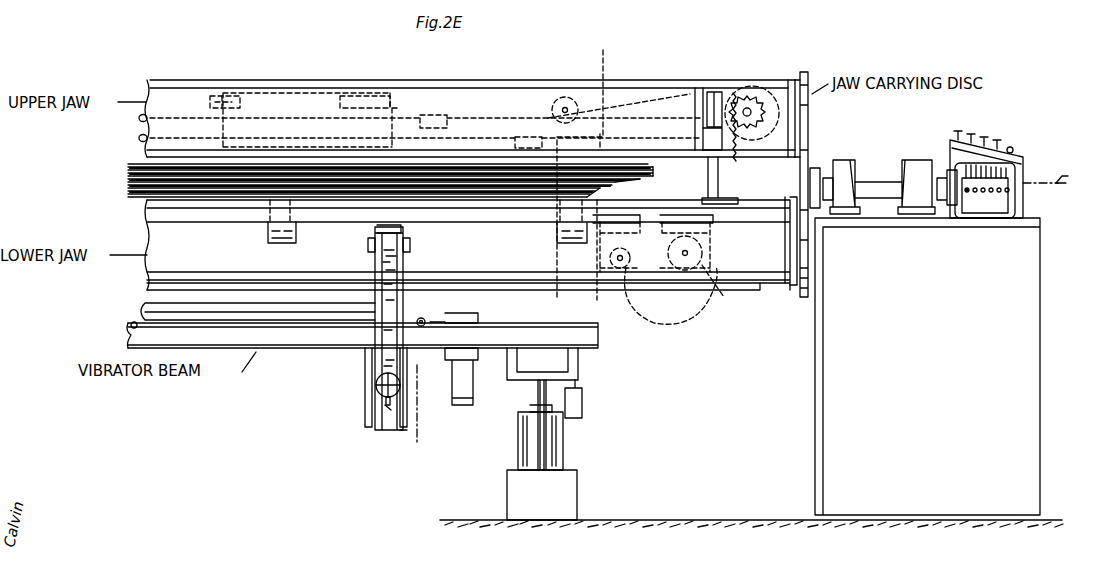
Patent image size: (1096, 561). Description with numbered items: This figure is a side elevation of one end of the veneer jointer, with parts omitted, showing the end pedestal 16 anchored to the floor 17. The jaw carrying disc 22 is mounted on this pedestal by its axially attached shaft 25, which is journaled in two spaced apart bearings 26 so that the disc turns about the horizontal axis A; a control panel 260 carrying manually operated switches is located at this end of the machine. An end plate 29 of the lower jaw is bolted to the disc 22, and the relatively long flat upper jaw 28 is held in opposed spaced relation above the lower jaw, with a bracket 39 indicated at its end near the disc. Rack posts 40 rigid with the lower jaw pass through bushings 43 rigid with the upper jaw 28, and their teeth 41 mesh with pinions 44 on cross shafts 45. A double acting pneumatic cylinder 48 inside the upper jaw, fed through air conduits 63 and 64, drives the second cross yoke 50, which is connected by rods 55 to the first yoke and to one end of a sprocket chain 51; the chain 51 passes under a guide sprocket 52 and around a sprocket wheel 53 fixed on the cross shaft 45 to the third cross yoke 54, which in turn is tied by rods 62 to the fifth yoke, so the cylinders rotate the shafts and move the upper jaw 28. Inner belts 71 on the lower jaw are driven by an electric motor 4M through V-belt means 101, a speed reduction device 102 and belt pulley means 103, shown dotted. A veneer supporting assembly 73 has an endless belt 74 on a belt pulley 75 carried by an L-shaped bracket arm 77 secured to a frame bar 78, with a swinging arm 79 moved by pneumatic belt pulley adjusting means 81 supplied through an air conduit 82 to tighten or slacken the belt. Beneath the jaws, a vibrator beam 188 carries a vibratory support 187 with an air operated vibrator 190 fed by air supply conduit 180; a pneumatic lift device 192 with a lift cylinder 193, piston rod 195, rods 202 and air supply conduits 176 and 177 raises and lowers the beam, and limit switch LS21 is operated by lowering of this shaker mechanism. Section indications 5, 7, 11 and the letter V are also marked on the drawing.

The upper jaw 28 is at (418, 82).
The double acting pneumatic cylinder 48 is at (258, 94).
The rods 62 is at (200, 118).
The rods 55 is at (215, 98).
The air conduit 63 is at (223, 94).
The air conduit 64 is at (352, 96).
The second cross yoke 50 is at (432, 116).
The third cross yoke 54 is at (528, 138).
The sprocket chain 51 is at (498, 124).
The guide sprocket 52 is at (558, 98).
The bushing 43 is at (706, 111).
The rack post 40 is at (703, 129).
The cross shaft 45 is at (752, 96).
The sprocket wheel 53 is at (752, 86).
The teeth 41 is at (736, 150).
The pinion 44 is at (756, 122).
The jaw carrying disc 22 is at (804, 70).
The bracket 39 is at (790, 80).
The section line 5 is at (614, 46).
The section line 7 is at (598, 190).
The section line 11 is at (404, 193).
The veneer strip V is at (139, 194).
The end plate 29 is at (789, 259).
The inner belts 71 is at (268, 236).
The V-belt means 101 is at (710, 238).
The speed reduction device 102 is at (642, 268).
The belt pulley means 103 is at (648, 318).
The electric motor 4M is at (716, 292).
The frame bar 78 is at (209, 308).
The vibrator beam 188 is at (278, 348).
The vibratory support 187 is at (470, 318).
The endless belt 74 is at (395, 276).
The belt pulley 75 is at (406, 232).
The veneer supporting assembly 73 is at (366, 236).
The swinging arm 79 is at (370, 383).
The belt pulley adjusting means 81 is at (384, 398).
The air conduit 82 is at (386, 408).
The bracket arm 77 is at (402, 416).
The air supply conduit 180 is at (446, 381).
The air operated vibrator 190 is at (474, 412).
The pneumatic lift device 192 is at (598, 474).
The rods 202 is at (548, 458).
The piston rod 195 is at (529, 404).
The air supply conduit 176 is at (518, 440).
The air supply conduit 177 is at (502, 466).
The pneumatic lift cylinder 193 is at (512, 470).
The limit switch LS21 is at (584, 403).
The floor 17 is at (733, 519).
The end pedestal 16 is at (979, 357).
The bearings 26 is at (920, 162).
The shaft 25 is at (878, 182).
The control panel 260 is at (1028, 132).
The horizontal axis A is at (1049, 174).